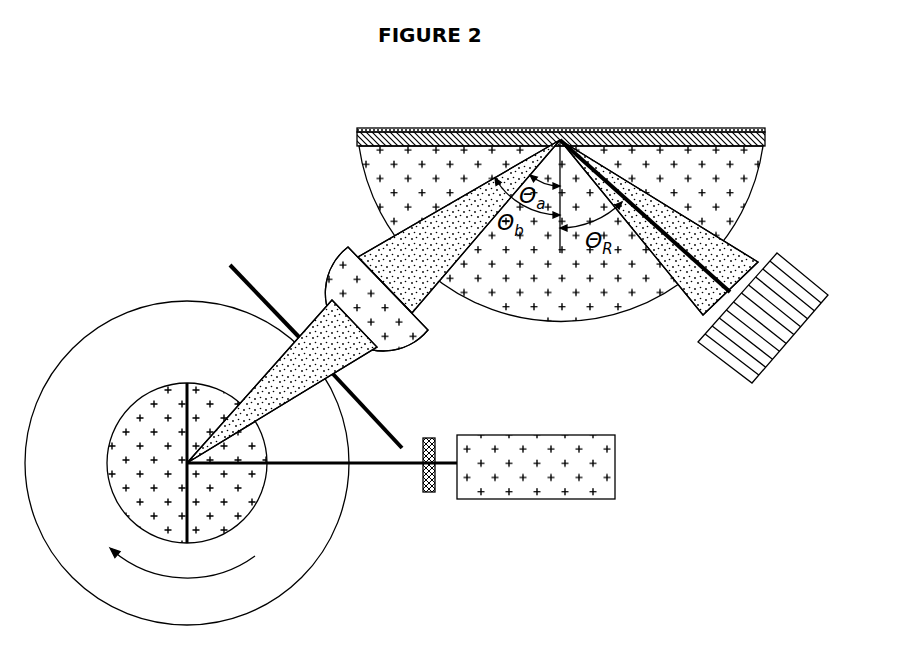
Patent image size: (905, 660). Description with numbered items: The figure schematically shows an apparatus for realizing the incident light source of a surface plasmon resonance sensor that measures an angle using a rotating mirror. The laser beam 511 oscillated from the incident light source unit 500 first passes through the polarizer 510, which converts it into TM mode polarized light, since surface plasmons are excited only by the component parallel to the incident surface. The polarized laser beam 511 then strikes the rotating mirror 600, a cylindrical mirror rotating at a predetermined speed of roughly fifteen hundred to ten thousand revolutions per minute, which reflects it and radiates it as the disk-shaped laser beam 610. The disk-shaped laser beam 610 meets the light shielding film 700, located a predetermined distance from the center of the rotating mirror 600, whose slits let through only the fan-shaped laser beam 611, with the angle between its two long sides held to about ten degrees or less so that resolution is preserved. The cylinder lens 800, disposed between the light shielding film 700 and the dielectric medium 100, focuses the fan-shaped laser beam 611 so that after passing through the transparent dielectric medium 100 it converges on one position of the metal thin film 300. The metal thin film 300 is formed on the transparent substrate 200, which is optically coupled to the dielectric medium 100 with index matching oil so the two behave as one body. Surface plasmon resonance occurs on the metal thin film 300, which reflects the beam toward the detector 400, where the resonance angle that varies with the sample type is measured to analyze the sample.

The dielectric medium 100 is at (707, 160).
The transparent substrate 200 is at (632, 131).
The metal thin film 300 is at (497, 129).
The detector 400 is at (787, 295).
The incident light source unit 500 is at (537, 490).
The polarizer 510 is at (428, 492).
The laser beam 511 is at (357, 465).
The rotating mirror 600 is at (148, 418).
The disk-shaped laser beam 610 is at (160, 323).
The fan-shaped laser beam 611 is at (352, 365).
The light shielding film 700 is at (240, 265).
The cylinder lens 800 is at (338, 270).